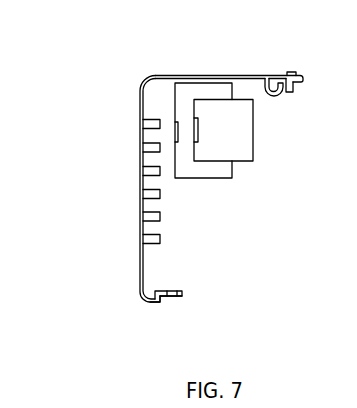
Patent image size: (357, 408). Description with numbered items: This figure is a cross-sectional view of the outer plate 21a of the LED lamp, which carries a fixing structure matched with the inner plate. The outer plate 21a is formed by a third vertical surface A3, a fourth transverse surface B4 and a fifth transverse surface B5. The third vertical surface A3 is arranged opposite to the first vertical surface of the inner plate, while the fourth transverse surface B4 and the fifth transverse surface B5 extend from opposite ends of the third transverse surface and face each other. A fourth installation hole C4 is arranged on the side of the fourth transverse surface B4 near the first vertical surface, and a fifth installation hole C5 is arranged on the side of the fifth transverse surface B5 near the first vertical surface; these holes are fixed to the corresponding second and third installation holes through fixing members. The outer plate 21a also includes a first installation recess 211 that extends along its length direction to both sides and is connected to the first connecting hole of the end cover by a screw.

The outer plate 21a is at (119, 107).
The third vertical surface A3 is at (141, 170).
The fourth transverse surface B4 is at (200, 78).
The first installation recess 211 is at (273, 84).
The fourth installation hole C4 is at (290, 77).
The fifth installation hole C5 is at (167, 291).
The fifth transverse surface B5 is at (182, 297).